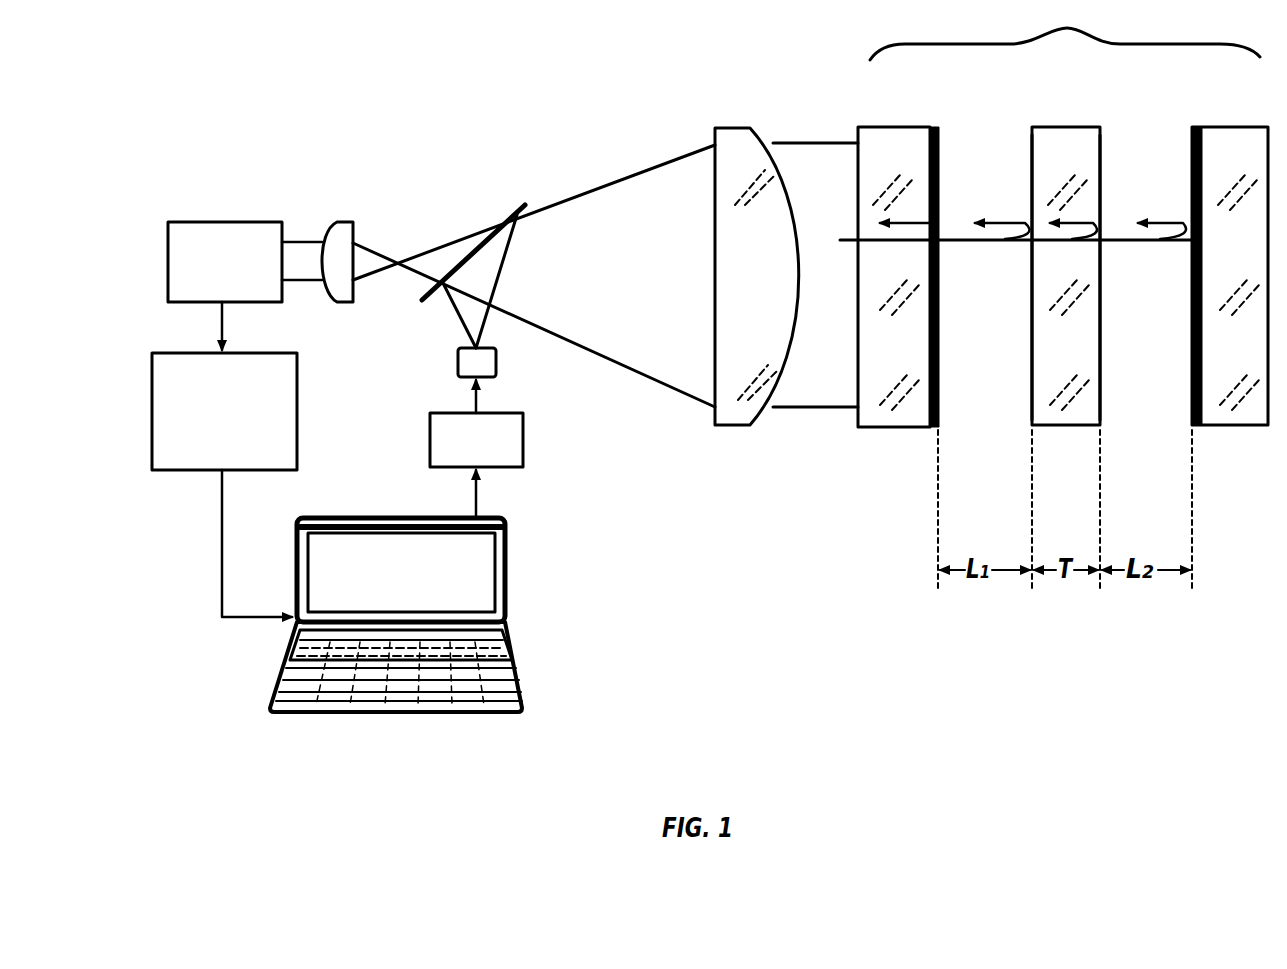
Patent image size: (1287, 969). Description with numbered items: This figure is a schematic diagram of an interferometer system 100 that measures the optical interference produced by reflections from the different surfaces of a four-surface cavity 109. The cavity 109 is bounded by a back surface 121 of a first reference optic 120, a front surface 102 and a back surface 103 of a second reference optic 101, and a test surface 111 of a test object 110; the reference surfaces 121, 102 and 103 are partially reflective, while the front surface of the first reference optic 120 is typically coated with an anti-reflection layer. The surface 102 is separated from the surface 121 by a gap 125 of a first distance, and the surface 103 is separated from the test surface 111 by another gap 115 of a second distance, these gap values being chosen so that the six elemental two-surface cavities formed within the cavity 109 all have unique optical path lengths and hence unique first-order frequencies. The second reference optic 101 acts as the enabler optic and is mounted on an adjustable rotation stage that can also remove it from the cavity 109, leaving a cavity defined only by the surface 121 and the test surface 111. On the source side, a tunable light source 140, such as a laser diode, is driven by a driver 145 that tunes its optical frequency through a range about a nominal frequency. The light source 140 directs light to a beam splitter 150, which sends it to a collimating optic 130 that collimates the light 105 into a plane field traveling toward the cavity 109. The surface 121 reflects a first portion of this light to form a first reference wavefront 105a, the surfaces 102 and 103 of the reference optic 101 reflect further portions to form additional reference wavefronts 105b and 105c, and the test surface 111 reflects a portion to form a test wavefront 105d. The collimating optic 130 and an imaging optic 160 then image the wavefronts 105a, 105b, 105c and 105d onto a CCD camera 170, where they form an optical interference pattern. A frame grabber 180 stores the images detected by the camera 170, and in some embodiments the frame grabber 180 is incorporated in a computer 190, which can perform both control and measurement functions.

The interferometer system 100 is at (750, 694).
The second reference optic 101 is at (1065, 127).
The front surface of second reference optic 102 is at (1030, 153).
The back surface of second reference optic 103 is at (1100, 180).
The light beam 105 is at (855, 237).
The first reference wavefront 105a is at (907, 220).
The reference wavefront 105b is at (1003, 230).
The reference wavefront 105c is at (1073, 218).
The test wavefront 105d is at (1171, 228).
The four-surface cavity 109 is at (1065, 30).
The test object 110 is at (1235, 127).
The test surface 111 is at (1193, 405).
The gap 115 is at (1143, 347).
The first reference optic 120 is at (893, 127).
The back surface of first reference optic 121 is at (937, 405).
The gap 125 is at (985, 347).
The collimating optic 130 is at (715, 128).
The tunable light source 140 is at (458, 360).
The driver 145 is at (476, 440).
The beam splitter 150 is at (473, 248).
The imaging optic 160 is at (353, 222).
The CCD camera 170 is at (225, 262).
The frame grabber 180 is at (224, 411).
The computer 190 is at (505, 610).